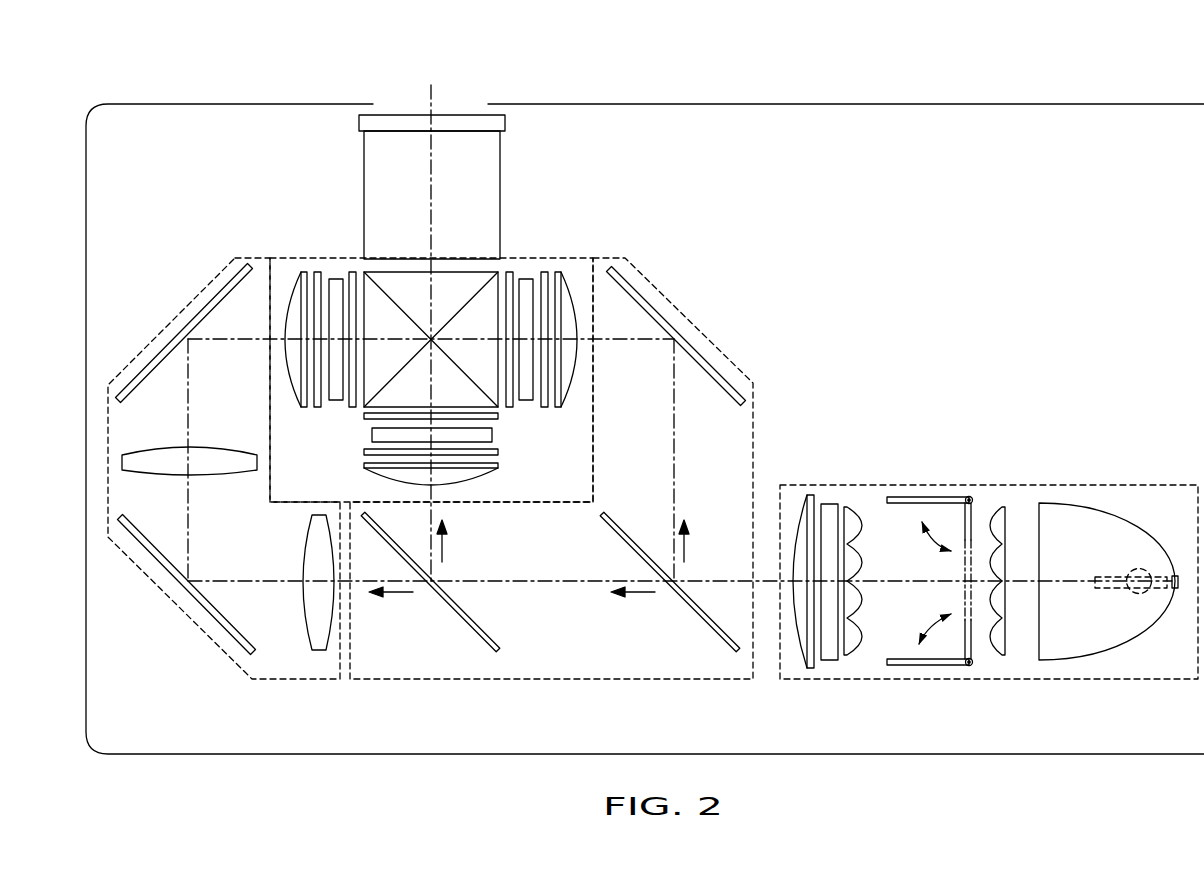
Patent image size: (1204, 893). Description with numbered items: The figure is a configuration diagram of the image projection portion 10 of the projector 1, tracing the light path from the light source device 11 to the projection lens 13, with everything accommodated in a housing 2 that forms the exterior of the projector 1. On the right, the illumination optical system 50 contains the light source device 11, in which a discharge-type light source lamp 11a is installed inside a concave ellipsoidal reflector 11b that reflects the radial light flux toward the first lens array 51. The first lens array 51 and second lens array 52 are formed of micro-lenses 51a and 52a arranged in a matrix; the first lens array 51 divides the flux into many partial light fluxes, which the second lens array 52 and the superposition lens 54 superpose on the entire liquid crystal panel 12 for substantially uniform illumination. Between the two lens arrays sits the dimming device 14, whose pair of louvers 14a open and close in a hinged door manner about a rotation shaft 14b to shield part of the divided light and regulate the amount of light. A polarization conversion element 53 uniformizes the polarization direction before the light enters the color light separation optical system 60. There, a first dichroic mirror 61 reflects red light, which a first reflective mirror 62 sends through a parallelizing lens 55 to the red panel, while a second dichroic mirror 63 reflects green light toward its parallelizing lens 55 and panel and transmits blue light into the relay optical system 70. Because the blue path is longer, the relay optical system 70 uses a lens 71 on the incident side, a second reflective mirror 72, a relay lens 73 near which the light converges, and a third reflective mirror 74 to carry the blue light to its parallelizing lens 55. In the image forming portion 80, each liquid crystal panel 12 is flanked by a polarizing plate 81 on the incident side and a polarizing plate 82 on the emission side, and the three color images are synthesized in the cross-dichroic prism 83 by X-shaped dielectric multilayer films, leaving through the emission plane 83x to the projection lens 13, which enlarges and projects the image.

The projector 1 is at (928, 68).
The housing 2 is at (721, 103).
The image projection portion 10 is at (800, 218).
The light source device 11 is at (1108, 503).
The light source lamp 11a is at (1139, 594).
The reflector 11b is at (1097, 660).
The liquid crystal panel 12 is at (335, 278).
The projection lens 13 is at (455, 122).
The dimming device 14 is at (936, 496).
The louver 14a is at (893, 505).
The rotation shaft 14b is at (967, 665).
The illumination optical system 50 is at (1073, 485).
The first lens array 51 is at (1001, 498).
The micro-lens 51a is at (998, 652).
The second lens array 52 is at (853, 498).
The micro-lens 52a is at (850, 652).
The polarization conversion element 53 is at (828, 505).
The superposition lens 54 is at (812, 500).
The parallelizing lens 55 is at (298, 288).
The color light separation optical system 60 is at (617, 258).
The first dichroic mirror 61 is at (712, 623).
The first reflective mirror 62 is at (717, 377).
The second dichroic mirror 63 is at (470, 623).
The relay optical system 70 is at (250, 258).
The lens on the incident side 71 is at (315, 613).
The second reflective mirror 72 is at (145, 545).
The relay lens 73 is at (223, 465).
The third reflective mirror 74 is at (152, 372).
The image forming portion 80 is at (570, 168).
The polarizing plate on the incident side 81 is at (313, 272).
The polarizing plate on the emission side 82 is at (351, 272).
The cross-dichroic prism 83 is at (403, 282).
The emission plane 83x is at (465, 273).